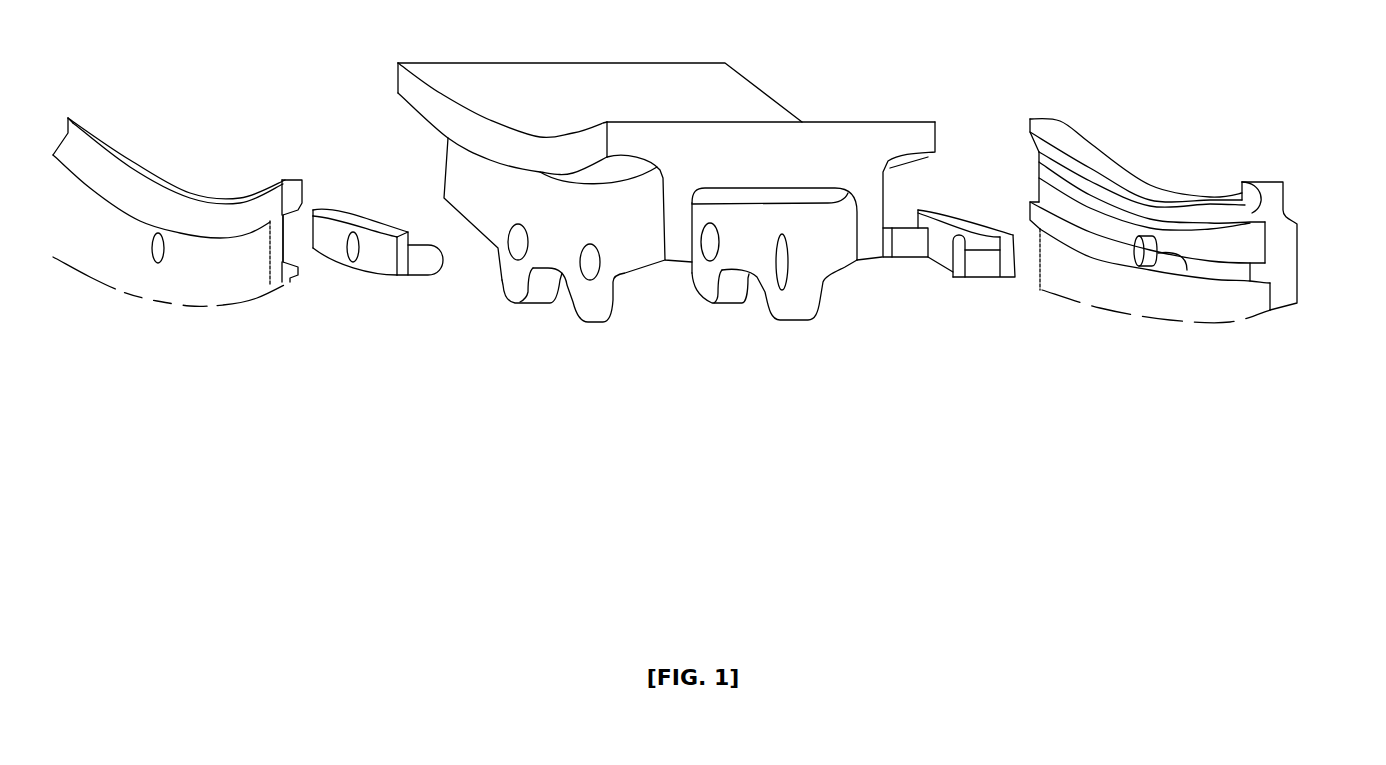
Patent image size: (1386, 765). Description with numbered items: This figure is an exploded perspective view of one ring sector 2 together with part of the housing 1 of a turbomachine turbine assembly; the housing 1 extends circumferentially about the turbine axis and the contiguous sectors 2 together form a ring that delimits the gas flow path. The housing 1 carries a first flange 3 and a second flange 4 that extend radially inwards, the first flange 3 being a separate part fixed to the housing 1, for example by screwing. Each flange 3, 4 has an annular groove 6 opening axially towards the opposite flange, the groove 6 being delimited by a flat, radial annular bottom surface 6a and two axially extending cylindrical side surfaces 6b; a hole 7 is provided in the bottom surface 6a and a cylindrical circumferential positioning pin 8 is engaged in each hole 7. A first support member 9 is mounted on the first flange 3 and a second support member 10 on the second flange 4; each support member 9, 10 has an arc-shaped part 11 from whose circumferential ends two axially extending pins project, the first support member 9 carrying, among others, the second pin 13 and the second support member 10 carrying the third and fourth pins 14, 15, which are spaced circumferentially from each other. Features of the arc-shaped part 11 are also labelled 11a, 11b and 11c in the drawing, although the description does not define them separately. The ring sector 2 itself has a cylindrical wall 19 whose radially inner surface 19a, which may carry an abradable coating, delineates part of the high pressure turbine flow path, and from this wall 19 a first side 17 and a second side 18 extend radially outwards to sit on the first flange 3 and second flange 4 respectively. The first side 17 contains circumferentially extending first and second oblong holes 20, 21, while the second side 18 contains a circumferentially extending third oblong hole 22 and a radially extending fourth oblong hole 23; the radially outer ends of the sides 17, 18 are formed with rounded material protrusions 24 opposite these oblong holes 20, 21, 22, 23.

The housing 1 is at (1189, 223).
The sector 2 is at (548, 53).
The first flange 3 is at (132, 197).
The second flange 4 is at (1136, 161).
The annular groove 6 is at (303, 250).
The bottom surface 6a is at (1260, 248).
The side surface 6b is at (1258, 207).
The hole 7 is at (1187, 270).
The positioning pin 8 is at (1147, 258).
The first support member 9 is at (363, 212).
The second support member 10 is at (967, 203).
The arc-shaped part 11 is at (372, 253).
The key top face 11a is at (383, 225).
The key bottom face 11b is at (333, 262).
The key opening 11c is at (340, 233).
The second pin 13 is at (425, 262).
The third pin 14 is at (907, 243).
The fourth pin 15 is at (980, 262).
The first side 17 is at (568, 256).
The second side 18 is at (787, 281).
The cylindrical wall 19 is at (666, 134).
The radially inner surface 19a is at (747, 107).
The first oblong hole 20 is at (517, 250).
The second oblong hole 21 is at (590, 282).
The third oblong hole 22 is at (710, 249).
The fourth oblong hole 23 is at (782, 290).
The rounded material protrusion 24 is at (540, 287).